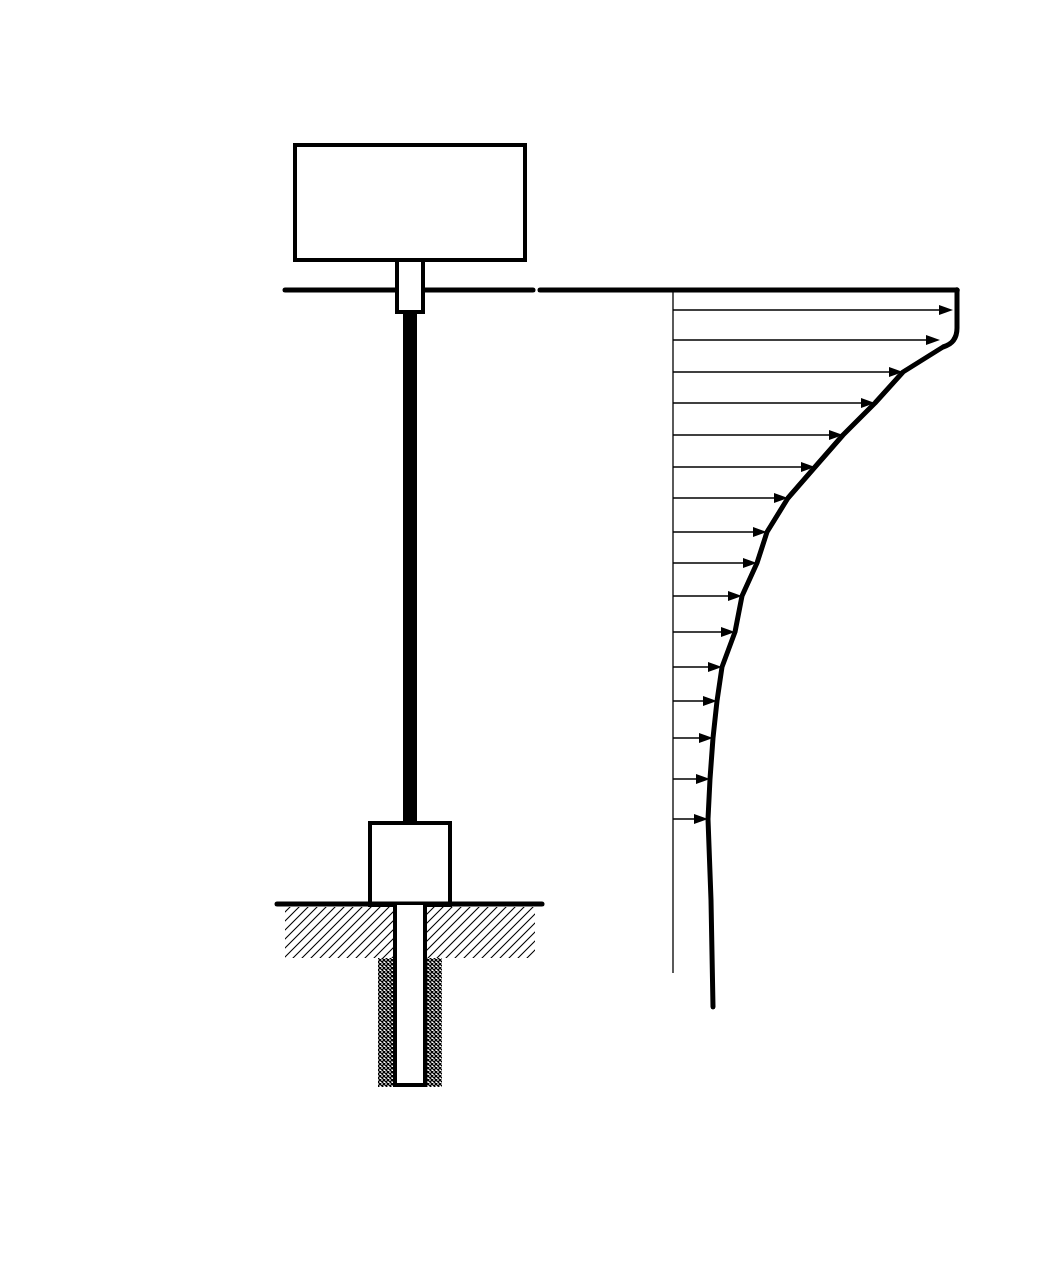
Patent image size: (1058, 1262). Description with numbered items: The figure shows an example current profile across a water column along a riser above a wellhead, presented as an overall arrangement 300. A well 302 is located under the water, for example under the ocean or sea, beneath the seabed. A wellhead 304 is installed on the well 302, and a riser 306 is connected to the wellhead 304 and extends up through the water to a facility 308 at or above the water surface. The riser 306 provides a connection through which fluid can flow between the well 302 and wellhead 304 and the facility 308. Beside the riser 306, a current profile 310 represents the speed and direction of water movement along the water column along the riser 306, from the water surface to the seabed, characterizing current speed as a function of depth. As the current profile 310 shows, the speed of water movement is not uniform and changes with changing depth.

The offshore production system 300 is at (523, 33).
The well 302 is at (470, 1009).
The wellhead 304 is at (327, 833).
The riser 306 is at (372, 443).
The facility 308 is at (410, 209).
The current profile 310 is at (748, 626).